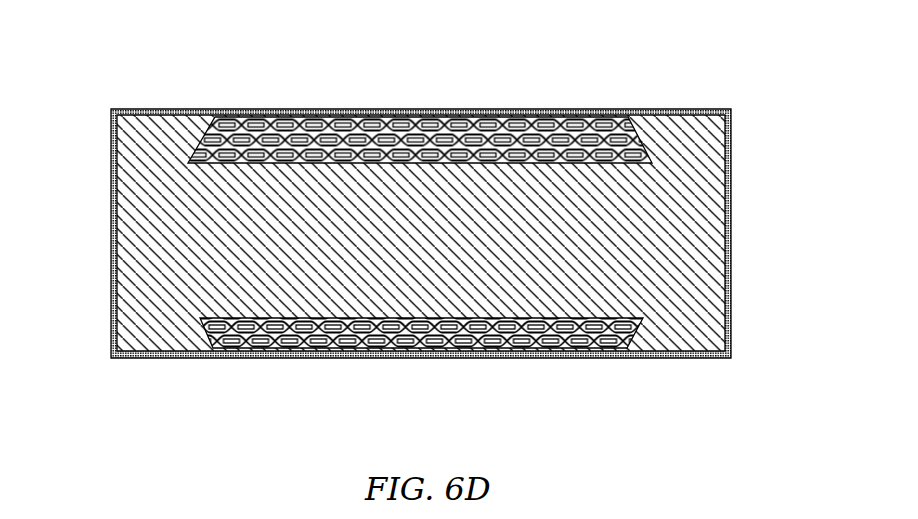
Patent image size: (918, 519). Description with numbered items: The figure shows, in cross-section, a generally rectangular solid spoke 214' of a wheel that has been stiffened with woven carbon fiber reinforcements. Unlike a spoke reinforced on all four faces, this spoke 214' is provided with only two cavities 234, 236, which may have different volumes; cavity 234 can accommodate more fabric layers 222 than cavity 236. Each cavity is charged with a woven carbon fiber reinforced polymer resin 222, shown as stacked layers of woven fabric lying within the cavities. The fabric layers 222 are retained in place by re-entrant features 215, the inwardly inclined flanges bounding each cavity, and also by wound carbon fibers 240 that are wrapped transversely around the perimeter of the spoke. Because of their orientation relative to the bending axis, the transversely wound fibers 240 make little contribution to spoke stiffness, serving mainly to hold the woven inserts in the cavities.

The wound carbon fibers 240 is at (732, 187).
The spoke 214' is at (378, 233).
The cavity 234 is at (218, 164).
The cavity 236 is at (218, 320).
The woven carbon fiber reinforced polymer resin 222 is at (348, 234).
The re-entrant features 215 is at (348, 238).